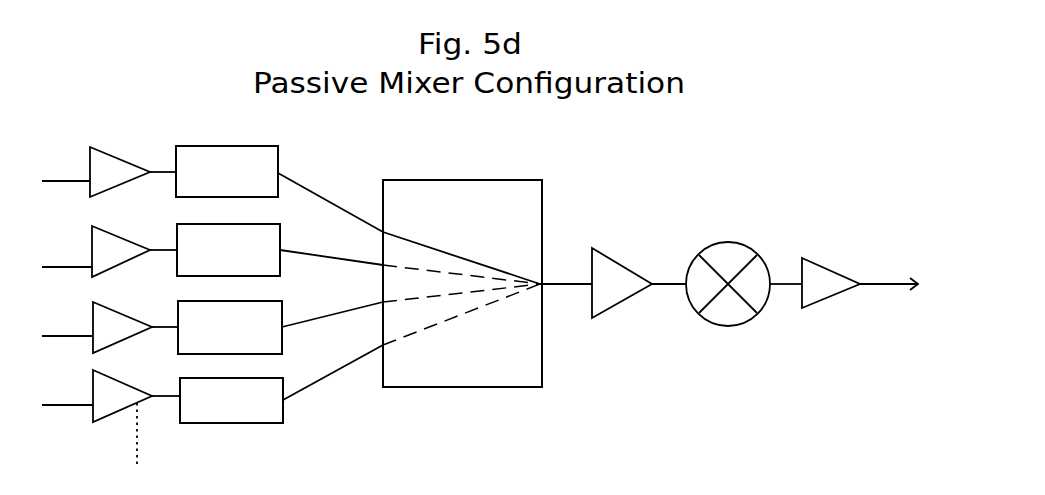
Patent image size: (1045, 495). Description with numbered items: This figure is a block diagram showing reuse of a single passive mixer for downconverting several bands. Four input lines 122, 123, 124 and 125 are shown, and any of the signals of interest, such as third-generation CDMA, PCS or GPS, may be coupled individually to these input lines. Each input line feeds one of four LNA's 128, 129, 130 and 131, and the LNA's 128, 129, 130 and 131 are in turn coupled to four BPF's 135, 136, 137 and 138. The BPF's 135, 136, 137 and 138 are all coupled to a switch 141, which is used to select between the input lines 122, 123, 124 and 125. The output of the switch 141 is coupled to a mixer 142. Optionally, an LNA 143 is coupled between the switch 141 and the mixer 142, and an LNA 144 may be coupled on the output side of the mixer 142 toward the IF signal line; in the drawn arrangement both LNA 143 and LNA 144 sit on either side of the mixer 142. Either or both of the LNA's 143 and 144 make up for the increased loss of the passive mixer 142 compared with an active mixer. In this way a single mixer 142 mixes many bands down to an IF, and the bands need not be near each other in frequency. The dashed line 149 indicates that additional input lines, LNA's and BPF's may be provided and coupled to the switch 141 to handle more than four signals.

The input line 122 is at (82, 181).
The input line 123 is at (82, 267).
The input line 124 is at (75, 336).
The input line 125 is at (83, 405).
The LNA 128 is at (132, 163).
The LNA 129 is at (122, 238).
The LNA 130 is at (133, 318).
The LNA 131 is at (138, 390).
The BPF 135 is at (210, 183).
The BPF 136 is at (211, 261).
The BPF 137 is at (212, 339).
The BPF 138 is at (214, 411).
The switch 141 is at (488, 180).
The mixer 142 is at (748, 245).
The LNA 143 is at (625, 267).
The LNA 144 is at (823, 265).
The dashed line 149 is at (141, 431).